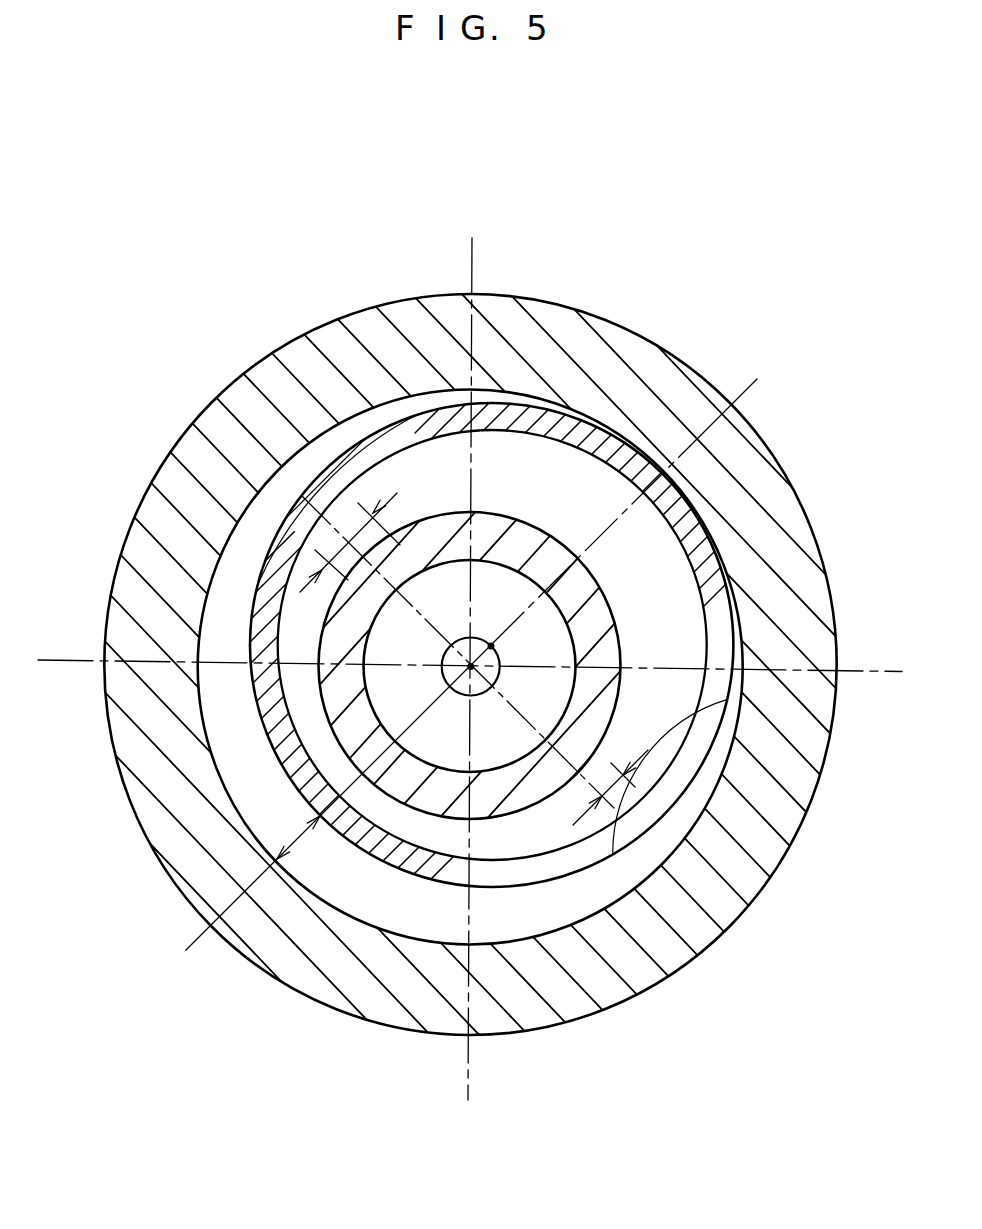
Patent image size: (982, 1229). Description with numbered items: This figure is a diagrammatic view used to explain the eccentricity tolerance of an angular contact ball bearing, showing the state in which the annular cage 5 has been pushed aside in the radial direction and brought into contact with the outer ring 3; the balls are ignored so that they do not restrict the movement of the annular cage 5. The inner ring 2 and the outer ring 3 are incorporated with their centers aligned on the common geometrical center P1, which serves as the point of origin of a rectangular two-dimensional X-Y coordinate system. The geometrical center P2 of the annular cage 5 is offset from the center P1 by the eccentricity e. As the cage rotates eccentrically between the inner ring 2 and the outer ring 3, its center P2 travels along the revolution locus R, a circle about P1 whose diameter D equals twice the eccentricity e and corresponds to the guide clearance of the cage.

The outer ring 3 is at (557, 322).
The annular cage 5 is at (605, 428).
The inner ring 2 is at (536, 546).
The revolution locus R is at (480, 695).
The geometrical center of the inner ring and the outer ring P1 is at (450, 651).
The geometrical center of the annular cage P2 is at (491, 644).
The diameter of the revolution locus D is at (350, 542).
The eccentricity e is at (610, 787).